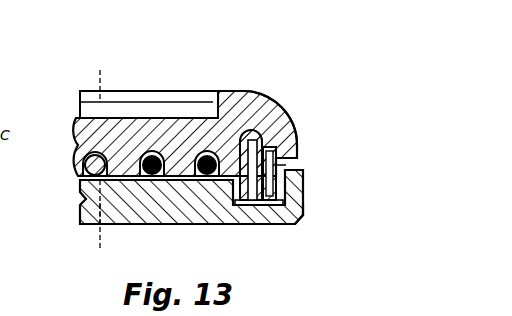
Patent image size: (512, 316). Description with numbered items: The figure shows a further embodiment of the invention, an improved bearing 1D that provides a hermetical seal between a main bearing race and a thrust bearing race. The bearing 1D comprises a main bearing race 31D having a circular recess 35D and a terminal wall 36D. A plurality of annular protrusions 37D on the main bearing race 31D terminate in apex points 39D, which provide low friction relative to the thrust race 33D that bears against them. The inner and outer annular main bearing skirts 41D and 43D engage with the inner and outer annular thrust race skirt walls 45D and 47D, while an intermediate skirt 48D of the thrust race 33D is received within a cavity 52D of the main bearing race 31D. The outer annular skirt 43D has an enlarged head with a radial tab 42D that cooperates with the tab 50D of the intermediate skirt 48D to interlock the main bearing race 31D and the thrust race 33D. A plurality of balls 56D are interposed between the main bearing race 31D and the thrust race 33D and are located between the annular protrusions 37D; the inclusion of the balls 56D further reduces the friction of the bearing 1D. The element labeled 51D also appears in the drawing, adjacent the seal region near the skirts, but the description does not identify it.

The improved bearing 1D is at (222, 66).
The main bearing race 31D is at (270, 96).
The thrust race 33D is at (85, 203).
The circular recess 35D is at (88, 110).
The terminal wall 36D is at (216, 110).
The annular protrusions 37D is at (126, 148).
The apex points 39D is at (142, 226).
The inner annular main bearing skirt 41D is at (233, 225).
The radial tab 42D is at (300, 225).
The outer annular main bearing skirt 43D is at (292, 172).
The inner annular thrust race skirt wall 45D is at (304, 185).
The outer annular thrust race skirt wall 47D is at (206, 222).
The intermediate skirt 48D is at (250, 225).
The tab 50D is at (290, 136).
The seal lip 51D is at (298, 165).
The cavity 52D is at (272, 110).
The balls 56D is at (157, 143).